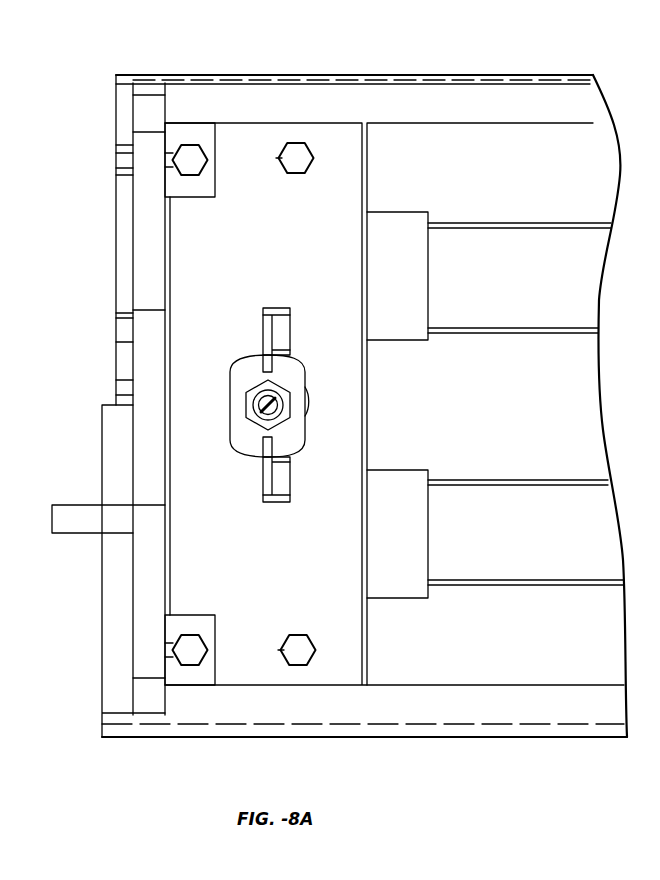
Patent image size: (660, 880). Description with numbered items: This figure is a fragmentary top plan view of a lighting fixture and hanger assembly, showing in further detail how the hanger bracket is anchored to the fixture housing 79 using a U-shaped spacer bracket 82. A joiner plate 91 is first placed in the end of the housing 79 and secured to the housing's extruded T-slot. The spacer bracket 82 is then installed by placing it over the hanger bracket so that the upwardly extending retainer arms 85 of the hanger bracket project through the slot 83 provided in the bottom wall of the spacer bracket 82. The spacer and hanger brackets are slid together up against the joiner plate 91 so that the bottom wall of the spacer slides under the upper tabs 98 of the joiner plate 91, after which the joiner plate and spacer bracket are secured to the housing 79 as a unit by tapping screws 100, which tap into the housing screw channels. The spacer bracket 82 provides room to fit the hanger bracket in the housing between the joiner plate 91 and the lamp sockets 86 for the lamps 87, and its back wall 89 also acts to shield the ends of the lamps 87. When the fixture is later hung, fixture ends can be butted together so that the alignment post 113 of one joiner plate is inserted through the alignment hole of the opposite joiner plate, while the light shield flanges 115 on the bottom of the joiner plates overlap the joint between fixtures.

The fixture housing 79 is at (413, 80).
The spacer bracket 82 is at (195, 558).
The slot 83 is at (282, 335).
The retainer arms 85 is at (268, 460).
The lamp sockets 86 is at (407, 500).
The lamps 87 is at (525, 525).
The back wall 89 is at (367, 172).
The joiner plate 91 is at (152, 258).
The upper tabs 98 is at (191, 128).
The tapping screws 100 is at (282, 162).
The alignment post 113 is at (72, 518).
The light shield flanges 115 is at (122, 678).